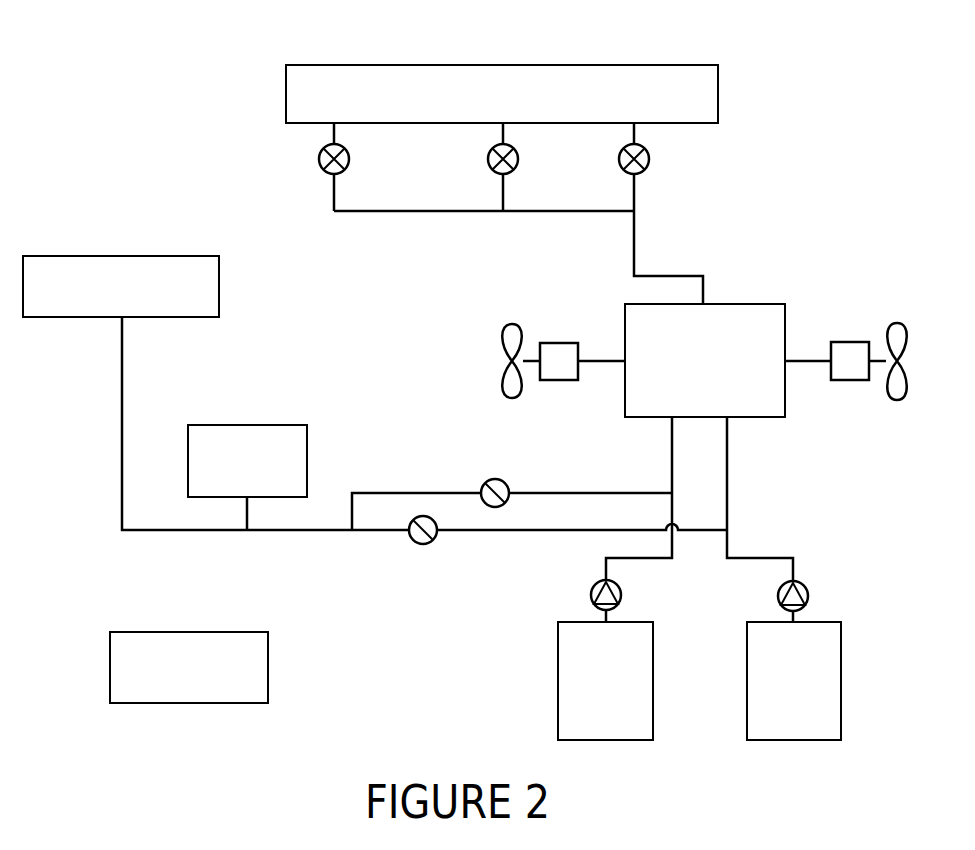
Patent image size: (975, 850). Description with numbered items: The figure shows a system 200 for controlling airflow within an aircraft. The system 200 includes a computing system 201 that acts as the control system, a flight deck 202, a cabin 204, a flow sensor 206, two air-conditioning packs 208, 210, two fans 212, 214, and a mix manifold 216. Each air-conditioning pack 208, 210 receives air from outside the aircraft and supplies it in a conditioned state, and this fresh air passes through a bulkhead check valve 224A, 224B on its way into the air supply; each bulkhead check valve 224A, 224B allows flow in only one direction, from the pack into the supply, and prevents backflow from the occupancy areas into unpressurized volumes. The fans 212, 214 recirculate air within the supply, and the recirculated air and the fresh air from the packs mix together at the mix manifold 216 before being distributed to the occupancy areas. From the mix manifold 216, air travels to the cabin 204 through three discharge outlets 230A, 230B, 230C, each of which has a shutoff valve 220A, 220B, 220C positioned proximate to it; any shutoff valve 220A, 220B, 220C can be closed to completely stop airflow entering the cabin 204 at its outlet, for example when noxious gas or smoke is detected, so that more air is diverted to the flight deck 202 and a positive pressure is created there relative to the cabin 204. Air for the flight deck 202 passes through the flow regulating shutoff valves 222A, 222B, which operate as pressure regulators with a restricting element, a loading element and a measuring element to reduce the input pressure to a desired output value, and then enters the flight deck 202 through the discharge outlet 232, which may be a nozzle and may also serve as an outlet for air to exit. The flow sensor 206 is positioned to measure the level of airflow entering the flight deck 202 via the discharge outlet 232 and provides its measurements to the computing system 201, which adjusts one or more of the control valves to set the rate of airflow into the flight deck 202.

The system 200 is at (173, 137).
The computing system 201 is at (198, 632).
The flight deck 202 is at (140, 256).
The cabin 204 is at (603, 65).
The flow sensor 206 is at (278, 425).
The air-conditioning pack 208 is at (558, 666).
The air-conditioning pack 210 is at (841, 672).
The fan 212 is at (562, 343).
The fan 214 is at (845, 342).
The mix manifold 216 is at (740, 304).
The shutoff valve 220A is at (327, 173).
The shutoff valve 220B is at (498, 172).
The shutoff valve 220C is at (648, 163).
The flow regulating shutoff valve 222A is at (500, 480).
The flow regulating shutoff valve 222B is at (420, 545).
The bulkhead check valve 224A is at (592, 590).
The bulkhead check valve 224B is at (807, 594).
The discharge outlet 230A is at (328, 125).
The discharge outlet 230B is at (498, 125).
The discharge outlet 230C is at (632, 125).
The discharge outlet 232 is at (120, 318).